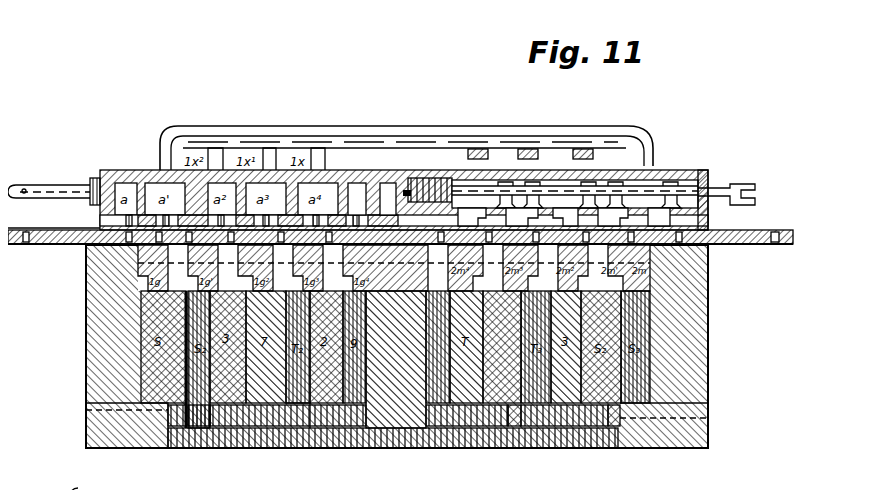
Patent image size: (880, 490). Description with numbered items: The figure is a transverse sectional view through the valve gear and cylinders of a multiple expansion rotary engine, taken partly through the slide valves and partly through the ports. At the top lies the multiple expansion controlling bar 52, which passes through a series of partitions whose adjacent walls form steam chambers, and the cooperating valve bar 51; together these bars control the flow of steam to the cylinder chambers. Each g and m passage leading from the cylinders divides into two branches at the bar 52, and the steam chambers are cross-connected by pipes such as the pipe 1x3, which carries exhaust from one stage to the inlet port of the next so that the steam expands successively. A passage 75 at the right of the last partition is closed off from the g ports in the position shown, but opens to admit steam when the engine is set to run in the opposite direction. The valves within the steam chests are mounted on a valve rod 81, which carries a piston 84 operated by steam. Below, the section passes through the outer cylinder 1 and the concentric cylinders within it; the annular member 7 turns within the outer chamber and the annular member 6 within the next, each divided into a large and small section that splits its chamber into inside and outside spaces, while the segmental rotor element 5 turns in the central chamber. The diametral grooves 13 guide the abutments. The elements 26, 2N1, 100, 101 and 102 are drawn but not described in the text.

The outer cylinder 1 is at (78, 348).
The segmental rotor element 5 is at (358, 410).
The annular member 6 is at (253, 410).
The annular member 7 is at (212, 440).
The diametral slots or grooves 13 is at (480, 488).
The control rod 26 is at (52, 180).
The valve bar 51 is at (722, 238).
The multiple expansion controlling bar 52 is at (55, 237).
The passage 75 is at (350, 195).
The valve rod 81 is at (705, 178).
The piston 84 is at (420, 170).
The bottom plate 100 is at (420, 430).
The lower plate 101 is at (510, 428).
The plate end block 102 is at (612, 442).
The pipe 1x3 is at (155, 138).
The cam shaft 2N1 is at (640, 165).